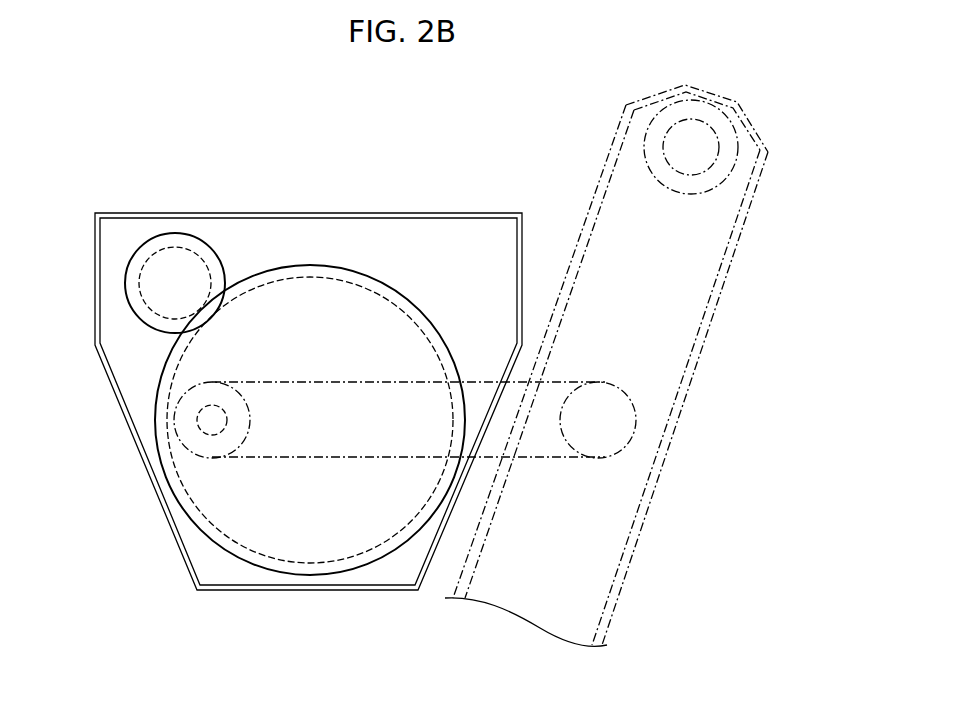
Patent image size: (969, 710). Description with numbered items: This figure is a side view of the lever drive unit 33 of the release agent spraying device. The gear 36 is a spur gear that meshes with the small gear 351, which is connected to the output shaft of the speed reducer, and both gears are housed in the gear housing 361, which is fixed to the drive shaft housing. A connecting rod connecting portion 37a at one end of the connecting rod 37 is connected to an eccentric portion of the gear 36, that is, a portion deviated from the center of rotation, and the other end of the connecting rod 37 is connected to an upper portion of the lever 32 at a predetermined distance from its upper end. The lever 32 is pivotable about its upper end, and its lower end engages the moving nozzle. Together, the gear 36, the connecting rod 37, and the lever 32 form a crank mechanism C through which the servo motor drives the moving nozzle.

The lever drive unit 33 is at (387, 153).
The gear housing 361 is at (393, 213).
The small gear 351 is at (130, 304).
The gear 36 is at (155, 415).
The connecting rod 37 is at (325, 457).
The connecting rod connecting portion 37a is at (212, 421).
The lever 32 is at (732, 272).
The crank mechanism C is at (692, 452).